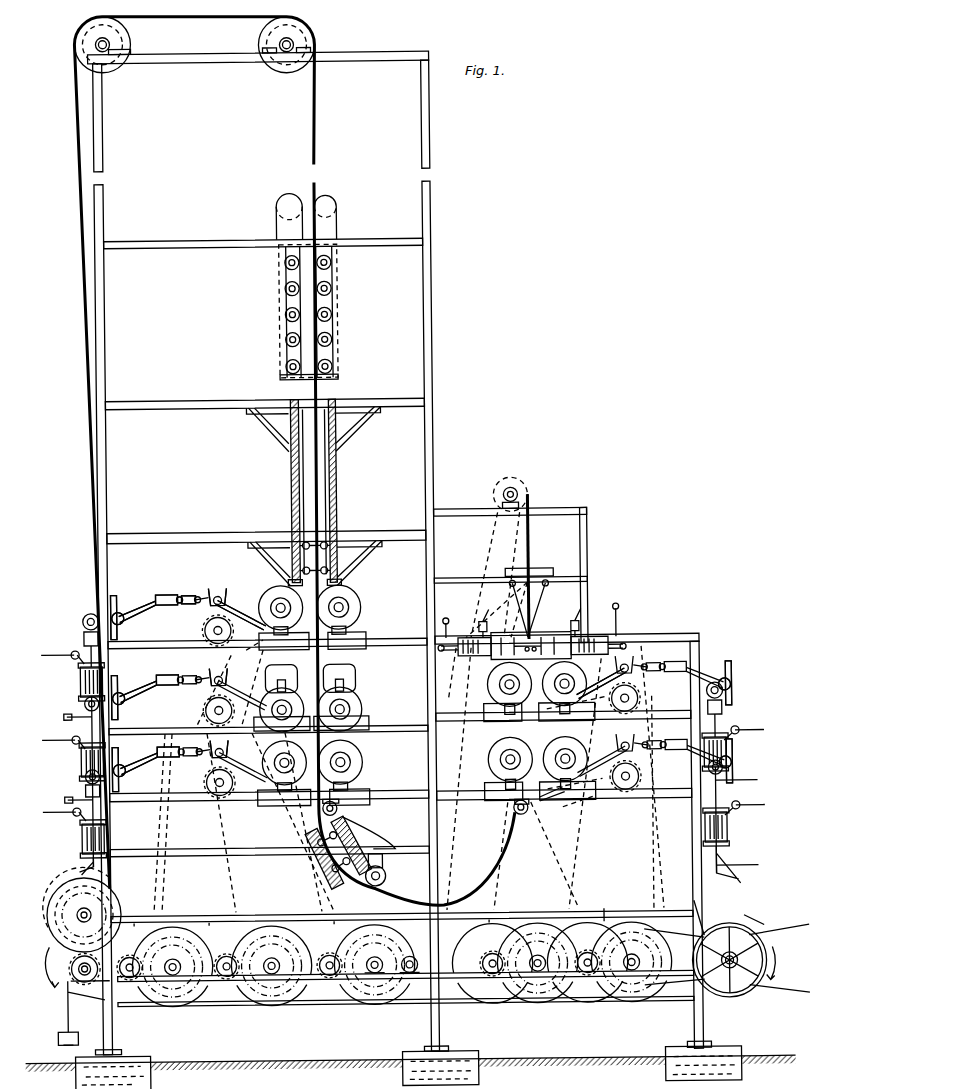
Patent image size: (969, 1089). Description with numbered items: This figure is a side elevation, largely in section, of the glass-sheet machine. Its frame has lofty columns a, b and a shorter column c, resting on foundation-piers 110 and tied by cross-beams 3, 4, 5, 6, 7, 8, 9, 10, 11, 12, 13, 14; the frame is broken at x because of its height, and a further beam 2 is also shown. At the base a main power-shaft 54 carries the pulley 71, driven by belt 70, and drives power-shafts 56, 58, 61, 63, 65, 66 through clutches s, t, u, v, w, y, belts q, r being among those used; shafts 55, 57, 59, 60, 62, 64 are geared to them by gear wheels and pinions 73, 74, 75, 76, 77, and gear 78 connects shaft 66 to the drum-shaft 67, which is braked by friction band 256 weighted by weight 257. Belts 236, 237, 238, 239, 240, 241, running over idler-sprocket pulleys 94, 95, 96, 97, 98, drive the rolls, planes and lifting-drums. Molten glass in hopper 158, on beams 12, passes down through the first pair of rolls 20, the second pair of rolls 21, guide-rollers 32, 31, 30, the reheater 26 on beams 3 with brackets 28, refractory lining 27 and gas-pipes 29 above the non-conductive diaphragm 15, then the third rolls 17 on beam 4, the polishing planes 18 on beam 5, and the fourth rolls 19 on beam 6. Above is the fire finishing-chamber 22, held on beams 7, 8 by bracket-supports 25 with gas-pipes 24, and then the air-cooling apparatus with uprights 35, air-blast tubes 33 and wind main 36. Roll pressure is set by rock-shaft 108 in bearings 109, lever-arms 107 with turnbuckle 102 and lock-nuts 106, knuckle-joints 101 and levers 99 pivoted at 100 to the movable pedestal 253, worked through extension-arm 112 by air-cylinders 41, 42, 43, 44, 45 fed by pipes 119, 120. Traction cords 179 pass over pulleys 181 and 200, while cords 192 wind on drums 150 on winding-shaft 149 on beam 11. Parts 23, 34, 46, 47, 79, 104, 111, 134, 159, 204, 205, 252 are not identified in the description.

The beam 2 is at (630, 645).
The cross-beam 3 is at (269, 846).
The cross-beam 4 is at (269, 789).
The cross-beam 5 is at (268, 726).
The cross-beam 6 is at (267, 637).
The cross-beam 7 is at (266, 526).
The cross-beam 8 is at (264, 396).
The cross-beam 9 is at (262, 237).
The cross-beam 10 is at (257, 53).
The cross-beam 11 is at (509, 502).
The cross-beam 12 is at (510, 568).
The cross-beam 13 is at (563, 704).
The cross-beam 14 is at (563, 786).
The non-conductive diaphragm 15 is at (402, 951).
The third pair of rolls 17 is at (305, 764).
The polishing planes 18 is at (311, 691).
The fourth pair of rolls 19 is at (309, 604).
The first pair of rolls 20 is at (530, 684).
The second pair of rolls 21 is at (538, 761).
The fire finishing-chamber 22 is at (311, 492).
The guide 23 is at (337, 492).
The perforated gas-pipes 24 is at (330, 545).
The bracket-supports 25 is at (311, 497).
The reheater 26 is at (326, 828).
The refractory lining 27 is at (304, 845).
The brackets 28 is at (303, 862).
The perforated gas-pipes 29 is at (322, 880).
The guide-roller 30 is at (319, 809).
The guide-roller 31 is at (383, 876).
The guide-roller 32 is at (511, 810).
The air-blast tubes 33 is at (334, 342).
The roller 34 is at (334, 263).
The uprights 35 is at (342, 325).
The wind main 36 is at (304, 216).
The air-cylinder 41 is at (721, 753).
The air-cylinder 42 is at (725, 845).
The air-cylinder 43 is at (83, 848).
The air-cylinder 44 is at (83, 770).
The air-cylinder 45 is at (82, 687).
The piston rod 46 is at (598, 648).
The piston rod 47 is at (464, 654).
The main power-shaft 54 is at (733, 975).
The shaft 55 is at (626, 975).
The power-shaft 56 is at (582, 977).
The shaft 57 is at (532, 975).
The power-shaft 58 is at (486, 977).
The shaft 59 is at (404, 975).
The shaft 60 is at (368, 975).
The power-shaft 61 is at (323, 977).
The shaft 62 is at (265, 975).
The power-shaft 63 is at (221, 977).
The shaft 64 is at (166, 975).
The power-shaft 65 is at (118, 985).
The power-shaft 66 is at (68, 970).
The drum-shaft 67 is at (72, 913).
The belt 70 is at (748, 938).
The pulley 71 is at (727, 959).
The gear wheel 73 is at (628, 1000).
The gear wheel 74 is at (538, 1000).
The gear wheel 75 is at (378, 1000).
The gear wheel 76 is at (280, 1000).
The gear wheel 77 is at (186, 1000).
The gear 78 is at (56, 893).
The lever arm 79 is at (244, 614).
The idler-sprocket pulley 94 is at (233, 644).
The idler-sprocket pulley 95 is at (203, 711).
The idler-sprocket pulley 96 is at (190, 769).
The idler-sprocket pulley 97 is at (640, 700).
The idler-sprocket pulley 98 is at (655, 762).
The counterpart levers 99 is at (608, 690).
The pivot 100 is at (262, 652).
The knuckle-joints 101 is at (221, 664).
The turnbuckle extension device 102 is at (182, 592).
The coupling 104 is at (180, 600).
The lock-nuts 106 is at (177, 597).
The lever-arms 107 is at (400, 678).
The rock-shaft 108 is at (726, 684).
The bearings 109 is at (722, 672).
The foundation-piers 110 is at (409, 1067).
The base plate 111 is at (400, 1043).
The extension-arm 112 is at (97, 612).
The air pipe 119 is at (30, 713).
The air pipe 120 is at (392, 714).
The link 134 is at (569, 799).
The winding-shaft 149 is at (518, 497).
The lifting-drums 150 is at (515, 485).
The hopper 158 is at (501, 610).
The link 159 is at (541, 609).
The traction cords 179 is at (506, 883).
The pulleys 181 is at (286, 37).
The traction-cords 192 is at (524, 523).
The pulleys 200 is at (100, 38).
The gear 204 is at (406, 957).
The gear 205 is at (370, 957).
The belt 236 is at (660, 776).
The belt 237 is at (547, 783).
The belt 238 is at (451, 779).
The belt 239 is at (374, 785).
The belt 240 is at (265, 780).
The belt 241 is at (155, 823).
The bearing block 252 is at (355, 650).
The movable pedestal 253 is at (426, 717).
The friction band 256 is at (63, 1002).
The weight 257 is at (53, 1036).
The lofty column a is at (97, 559).
The lofty column b is at (420, 555).
The column of less height c is at (690, 844).
The frame break x is at (272, 169).
The clutch y is at (42, 965).
The clutch w is at (134, 916).
The clutch v is at (208, 916).
The clutch u is at (333, 914).
The clutch t is at (487, 913).
The clutch s is at (602, 907).
The belt q is at (708, 905).
The belt r is at (754, 909).